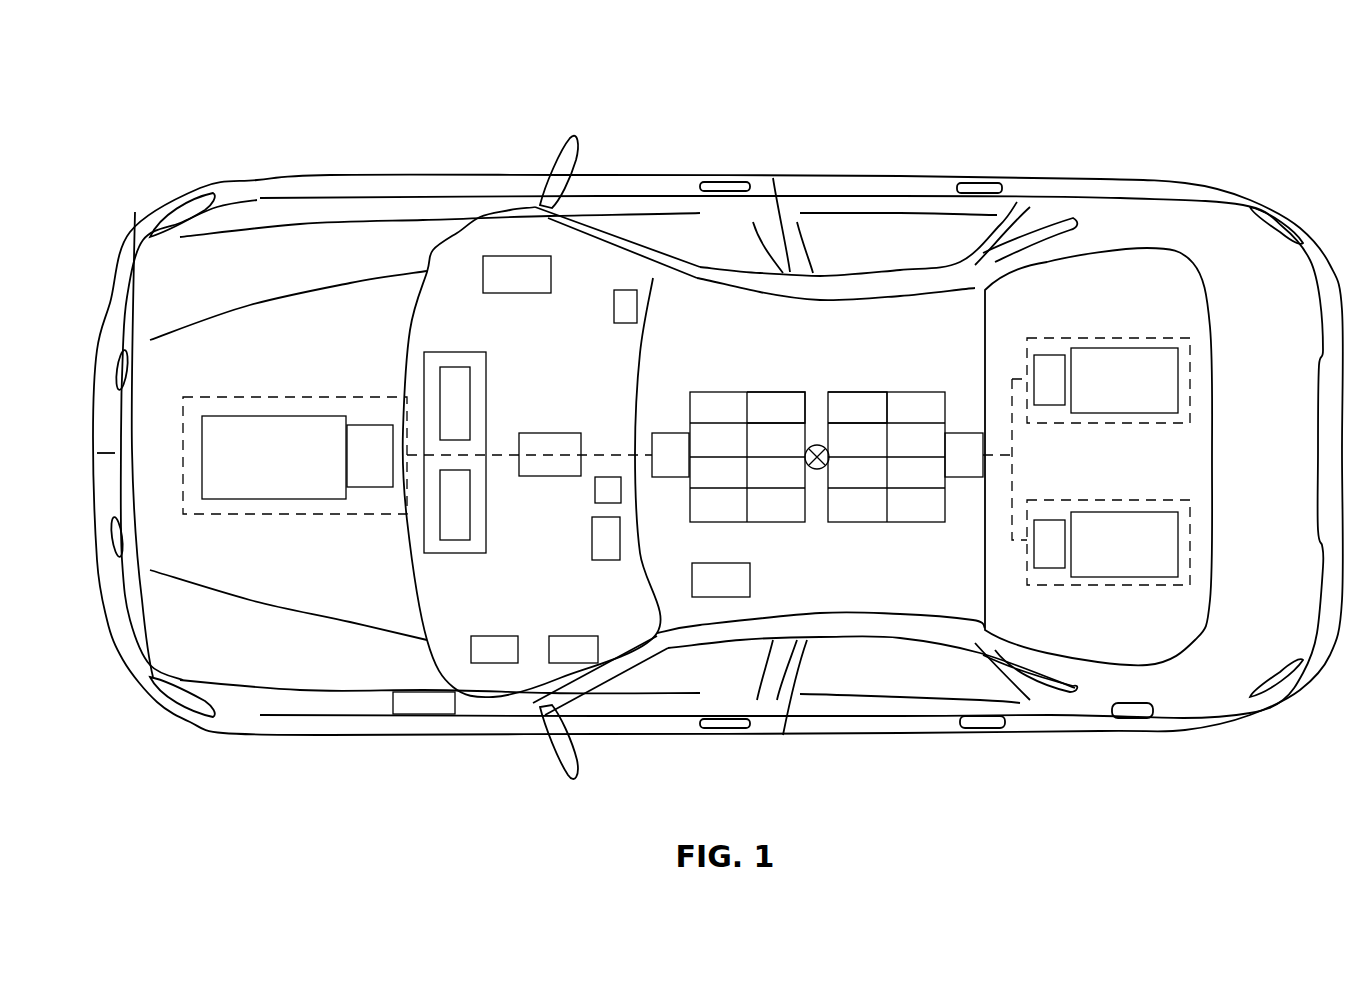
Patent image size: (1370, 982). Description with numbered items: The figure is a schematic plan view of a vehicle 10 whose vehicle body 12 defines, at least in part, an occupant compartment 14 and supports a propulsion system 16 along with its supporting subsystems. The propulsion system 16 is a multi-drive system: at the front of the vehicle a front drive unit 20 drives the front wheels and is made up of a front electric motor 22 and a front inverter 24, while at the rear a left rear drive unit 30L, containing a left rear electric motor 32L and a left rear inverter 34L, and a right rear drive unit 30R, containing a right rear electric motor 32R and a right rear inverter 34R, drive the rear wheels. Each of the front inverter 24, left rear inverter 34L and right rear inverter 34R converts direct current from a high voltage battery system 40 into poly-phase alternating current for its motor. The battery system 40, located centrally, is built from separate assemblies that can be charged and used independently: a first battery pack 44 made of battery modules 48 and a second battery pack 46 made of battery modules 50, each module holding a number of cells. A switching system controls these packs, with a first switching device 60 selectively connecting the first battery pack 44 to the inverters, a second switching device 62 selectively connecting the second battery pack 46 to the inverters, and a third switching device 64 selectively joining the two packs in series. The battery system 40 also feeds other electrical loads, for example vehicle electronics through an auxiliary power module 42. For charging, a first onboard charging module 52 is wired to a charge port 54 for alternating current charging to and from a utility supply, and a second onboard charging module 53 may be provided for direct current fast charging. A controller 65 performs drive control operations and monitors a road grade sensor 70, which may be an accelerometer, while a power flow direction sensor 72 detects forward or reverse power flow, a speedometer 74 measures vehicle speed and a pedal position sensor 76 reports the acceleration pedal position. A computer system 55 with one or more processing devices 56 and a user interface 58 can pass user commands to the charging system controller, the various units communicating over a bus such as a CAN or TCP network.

The vehicle 10 is at (192, 96).
The vehicle body 12 is at (791, 174).
The occupant compartment 14 is at (857, 628).
The propulsion system 16 is at (273, 553).
The front drive unit 20 is at (237, 397).
The front electric motor 22 is at (280, 416).
The front inverter 24 is at (370, 488).
The right rear drive unit 30R is at (1140, 423).
The left rear drive unit 30L is at (1117, 500).
The right rear electric motor 32R is at (1122, 348).
The left rear electric motor 32L is at (1125, 577).
The right rear inverter 34R is at (1048, 355).
The left rear inverter 34L is at (1052, 568).
The battery system 40 is at (743, 353).
The auxiliary power module 42 is at (725, 563).
The first battery pack 44 is at (783, 522).
The second battery pack 46 is at (873, 522).
The battery modules 48 is at (776, 403).
The battery modules 50 is at (857, 403).
The first onboard charging module 52 is at (573, 636).
The second onboard charging module 53 is at (497, 636).
The charge port 54 is at (430, 692).
The computer system 55 is at (456, 338).
The processing devices 56 is at (470, 405).
The user interface 58 is at (470, 515).
The first switching device 60 is at (677, 433).
The second switching device 62 is at (975, 433).
The third switching device 64 is at (820, 470).
The controller 65 is at (560, 433).
The road grade sensor 70 is at (512, 256).
The power flow direction sensor 72 is at (626, 290).
The speedometer 74 is at (595, 488).
The pedal position sensor 76 is at (592, 550).